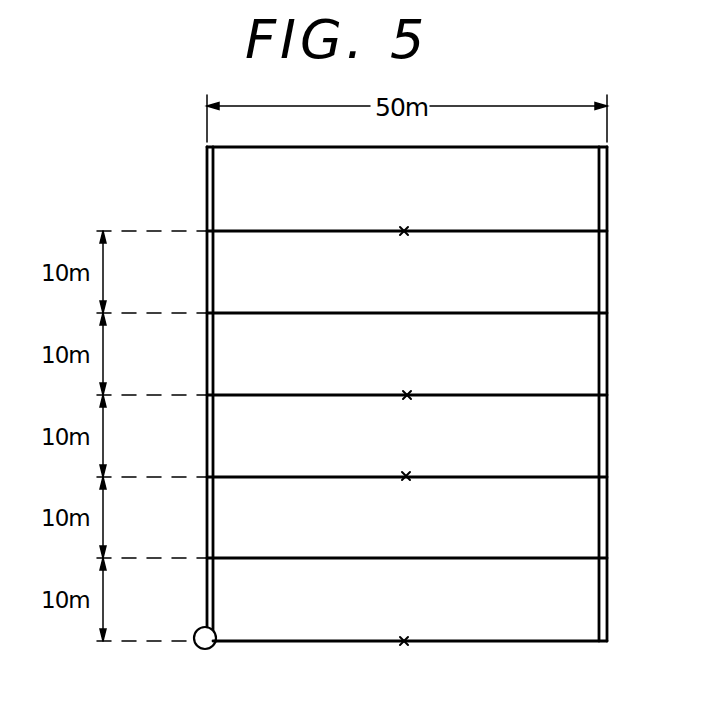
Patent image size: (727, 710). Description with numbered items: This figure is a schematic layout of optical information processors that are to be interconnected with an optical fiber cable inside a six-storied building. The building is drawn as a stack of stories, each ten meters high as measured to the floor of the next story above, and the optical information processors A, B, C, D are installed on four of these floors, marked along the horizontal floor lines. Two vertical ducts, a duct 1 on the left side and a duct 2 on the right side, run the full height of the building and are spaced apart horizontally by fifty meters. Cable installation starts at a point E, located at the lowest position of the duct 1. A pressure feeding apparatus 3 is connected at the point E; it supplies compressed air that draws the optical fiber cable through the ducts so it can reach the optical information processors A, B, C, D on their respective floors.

The duct 1 is at (212, 163).
The duct 2 is at (603, 584).
The pressure feeding apparatus 3 is at (199, 649).
The optical information processor A is at (408, 628).
The optical information processor B is at (409, 464).
The optical information processor C is at (409, 383).
The optical information processor D is at (406, 218).
The point E is at (213, 646).